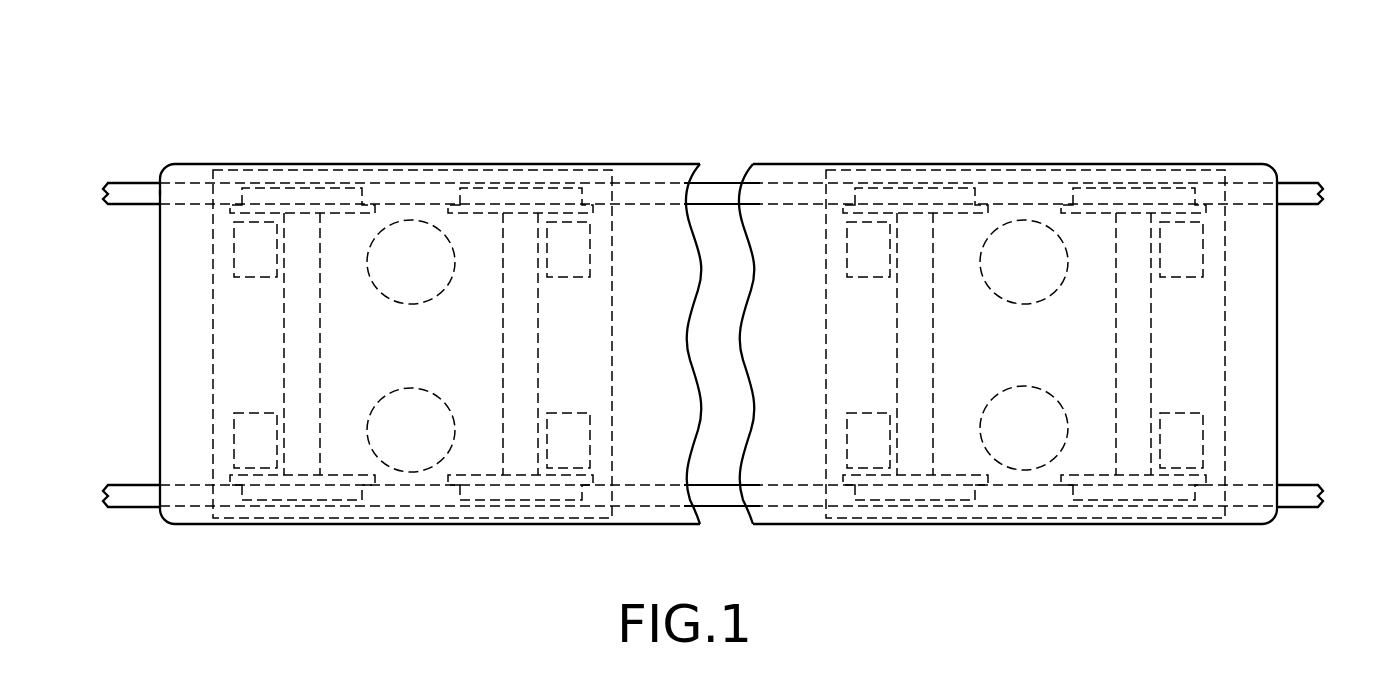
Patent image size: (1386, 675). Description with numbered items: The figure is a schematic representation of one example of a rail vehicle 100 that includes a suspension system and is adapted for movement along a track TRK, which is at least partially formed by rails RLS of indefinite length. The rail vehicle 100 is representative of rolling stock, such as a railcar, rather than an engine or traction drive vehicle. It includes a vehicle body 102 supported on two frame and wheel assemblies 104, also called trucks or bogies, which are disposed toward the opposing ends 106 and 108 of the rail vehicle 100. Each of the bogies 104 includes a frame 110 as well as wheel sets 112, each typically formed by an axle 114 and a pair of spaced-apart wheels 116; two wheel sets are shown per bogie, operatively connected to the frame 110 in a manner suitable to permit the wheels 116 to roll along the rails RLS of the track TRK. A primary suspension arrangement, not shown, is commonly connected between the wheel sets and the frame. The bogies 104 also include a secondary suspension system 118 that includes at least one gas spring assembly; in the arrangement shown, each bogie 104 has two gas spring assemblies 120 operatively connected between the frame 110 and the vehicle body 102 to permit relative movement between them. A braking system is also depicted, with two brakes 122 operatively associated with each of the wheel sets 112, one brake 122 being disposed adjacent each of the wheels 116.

The rail vehicle 100 is at (1163, 85).
The vehicle body 102 is at (784, 160).
The frame and wheel assembly 104 is at (471, 444).
The end 106 is at (195, 158).
The end 108 is at (1282, 155).
The frame 110 is at (275, 523).
The wheel set 112 is at (270, 320).
The axle 114 is at (283, 388).
The wheel 116 is at (282, 187).
The secondary suspension system 118 is at (410, 322).
The gas spring assembly 120 is at (408, 218).
The brake 122 is at (247, 257).
The rail RLS is at (140, 187).
The track TRK is at (107, 513).